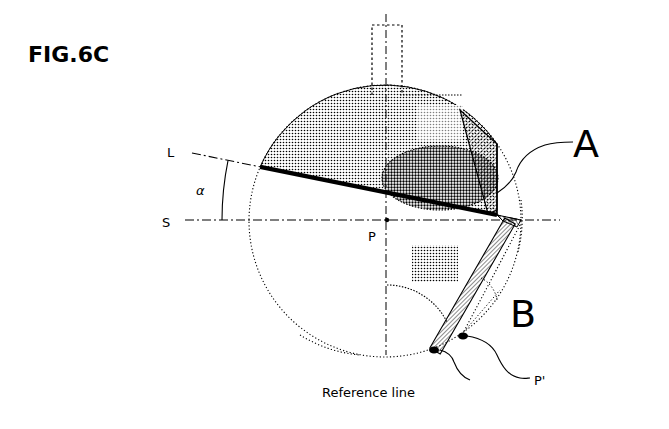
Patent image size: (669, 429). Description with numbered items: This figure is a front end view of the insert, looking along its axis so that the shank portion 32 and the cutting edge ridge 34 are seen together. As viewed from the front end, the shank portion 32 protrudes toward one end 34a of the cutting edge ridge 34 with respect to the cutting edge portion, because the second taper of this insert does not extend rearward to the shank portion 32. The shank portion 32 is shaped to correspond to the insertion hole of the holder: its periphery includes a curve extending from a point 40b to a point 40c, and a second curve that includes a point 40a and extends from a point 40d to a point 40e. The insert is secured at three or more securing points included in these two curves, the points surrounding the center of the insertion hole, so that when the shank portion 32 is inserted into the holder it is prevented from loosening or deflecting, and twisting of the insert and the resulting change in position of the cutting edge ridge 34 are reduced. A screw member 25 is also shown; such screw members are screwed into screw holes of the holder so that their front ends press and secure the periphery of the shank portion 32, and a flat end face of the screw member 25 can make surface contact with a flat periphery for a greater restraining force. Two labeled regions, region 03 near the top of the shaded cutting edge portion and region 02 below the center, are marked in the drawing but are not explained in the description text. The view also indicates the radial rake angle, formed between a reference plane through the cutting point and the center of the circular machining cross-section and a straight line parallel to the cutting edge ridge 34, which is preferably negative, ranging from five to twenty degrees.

The screw member 25 is at (393, 47).
The point 40b is at (328, 98).
The region 03 is at (440, 122).
The cutting edge ridge 34 is at (497, 150).
The point 40d is at (438, 98).
The end of cutting edge ridge 34a is at (515, 232).
The point 40a is at (522, 237).
The region 02 is at (435, 263).
The shank portion 32 is at (503, 264).
The point 40c is at (330, 350).
The point 40e is at (469, 371).